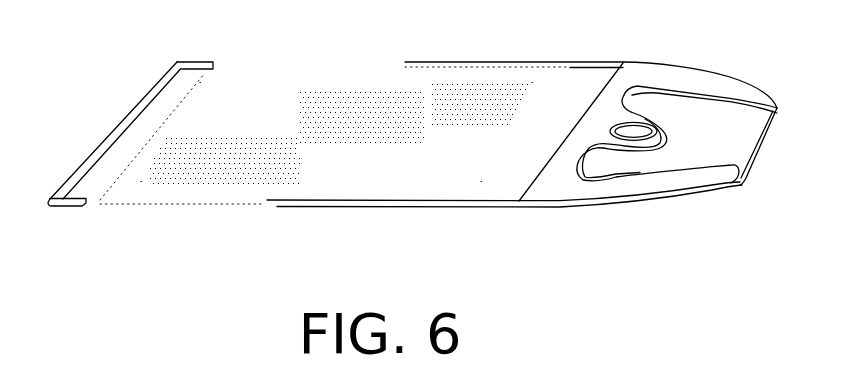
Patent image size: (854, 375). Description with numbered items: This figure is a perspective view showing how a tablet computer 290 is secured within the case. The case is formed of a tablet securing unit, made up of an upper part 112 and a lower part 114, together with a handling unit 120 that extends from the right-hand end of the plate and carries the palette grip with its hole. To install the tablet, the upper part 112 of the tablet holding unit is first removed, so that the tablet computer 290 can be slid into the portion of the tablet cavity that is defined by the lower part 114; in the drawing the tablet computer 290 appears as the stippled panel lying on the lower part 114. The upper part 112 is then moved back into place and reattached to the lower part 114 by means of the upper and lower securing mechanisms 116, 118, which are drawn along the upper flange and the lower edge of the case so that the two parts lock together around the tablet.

The upper part 112 is at (109, 133).
The lower part 114 is at (318, 207).
The upper securing mechanism 116 is at (205, 62).
The lower securing mechanism 118 is at (405, 62).
The handling unit 120 is at (553, 208).
The tablet computer 290 is at (156, 207).